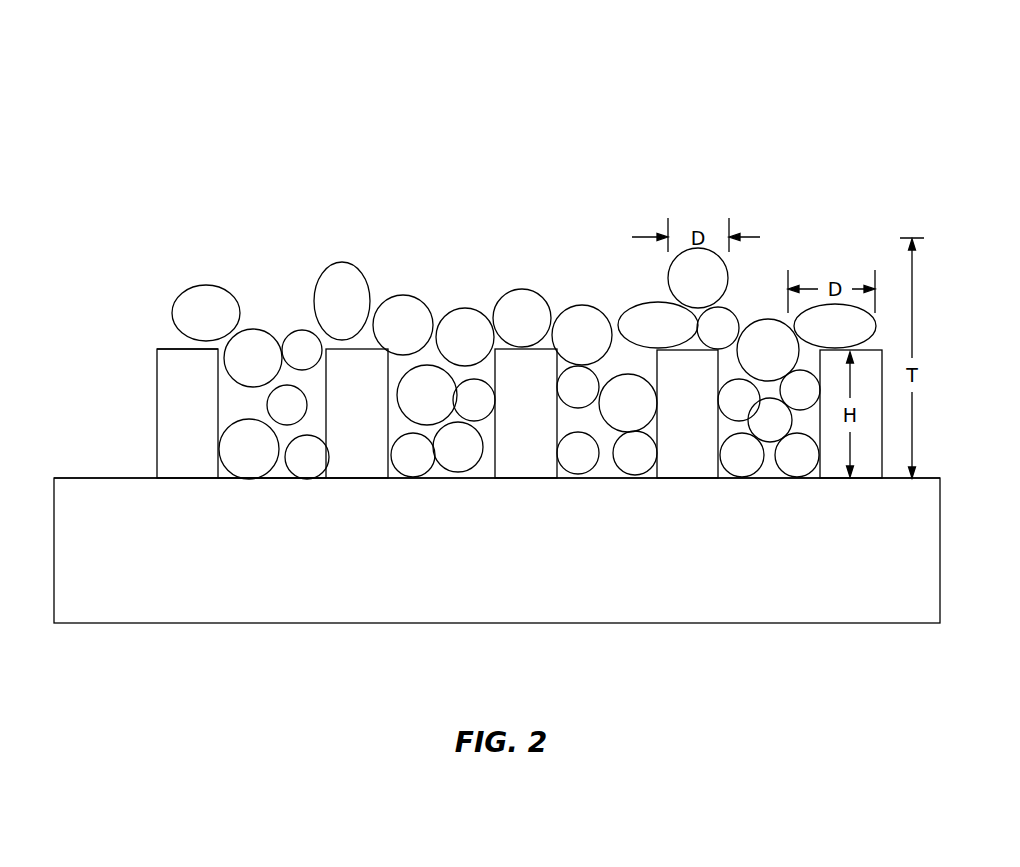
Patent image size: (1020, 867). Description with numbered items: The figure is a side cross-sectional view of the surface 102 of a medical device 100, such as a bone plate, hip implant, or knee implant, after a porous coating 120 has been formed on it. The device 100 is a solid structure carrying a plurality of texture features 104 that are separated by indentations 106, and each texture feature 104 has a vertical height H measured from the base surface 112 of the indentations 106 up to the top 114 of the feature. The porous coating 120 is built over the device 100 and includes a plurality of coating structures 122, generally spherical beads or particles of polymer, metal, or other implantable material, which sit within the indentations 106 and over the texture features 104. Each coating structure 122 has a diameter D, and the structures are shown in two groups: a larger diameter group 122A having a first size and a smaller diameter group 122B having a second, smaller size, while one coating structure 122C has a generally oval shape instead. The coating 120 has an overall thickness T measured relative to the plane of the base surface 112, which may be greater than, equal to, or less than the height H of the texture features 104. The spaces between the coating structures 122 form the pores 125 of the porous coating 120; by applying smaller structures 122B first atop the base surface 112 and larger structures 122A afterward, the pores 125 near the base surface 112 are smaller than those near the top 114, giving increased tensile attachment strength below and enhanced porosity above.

The medical device 100 is at (268, 158).
The surface 102 is at (85, 462).
The texture features 104 is at (145, 380).
The indentations 106 is at (279, 490).
The base surface 112 is at (145, 477).
The top 114 is at (166, 348).
The porous coating 120 is at (476, 222).
The coating structures 122 is at (266, 318).
The larger diameter group of coating structures 122A is at (455, 305).
The smaller diameter group of coating structures 122B is at (803, 470).
The oval coating structure 122C is at (339, 258).
The pores 125 is at (629, 355).